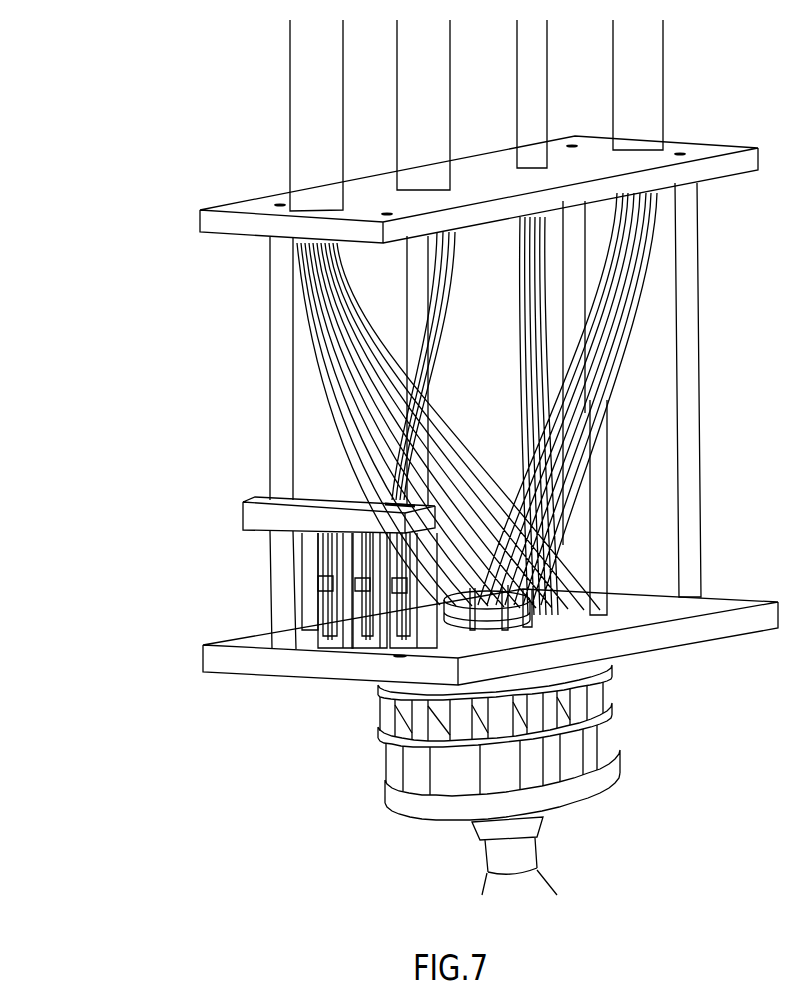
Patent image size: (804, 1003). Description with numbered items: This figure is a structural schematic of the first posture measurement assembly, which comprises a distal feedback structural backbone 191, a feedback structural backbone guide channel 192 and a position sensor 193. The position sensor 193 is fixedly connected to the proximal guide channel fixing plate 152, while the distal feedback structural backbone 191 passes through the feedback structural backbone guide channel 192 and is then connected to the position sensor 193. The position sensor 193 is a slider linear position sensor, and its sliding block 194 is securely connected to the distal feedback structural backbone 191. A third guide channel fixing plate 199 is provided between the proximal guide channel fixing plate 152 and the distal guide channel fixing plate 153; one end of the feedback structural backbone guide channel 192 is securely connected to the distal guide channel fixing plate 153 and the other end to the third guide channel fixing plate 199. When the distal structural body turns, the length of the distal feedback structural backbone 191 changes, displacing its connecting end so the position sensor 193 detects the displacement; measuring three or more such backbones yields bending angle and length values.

The distal guide channel fixing plate 153 is at (227, 222).
The feedback structural backbone guide channel 192 is at (320, 430).
The third guide channel fixing plate 199 is at (288, 513).
The distal feedback structural backbone 191 is at (332, 563).
The sliding block 194 is at (322, 583).
The position sensor 193 is at (322, 633).
The proximal guide channel fixing plate 152 is at (353, 668).